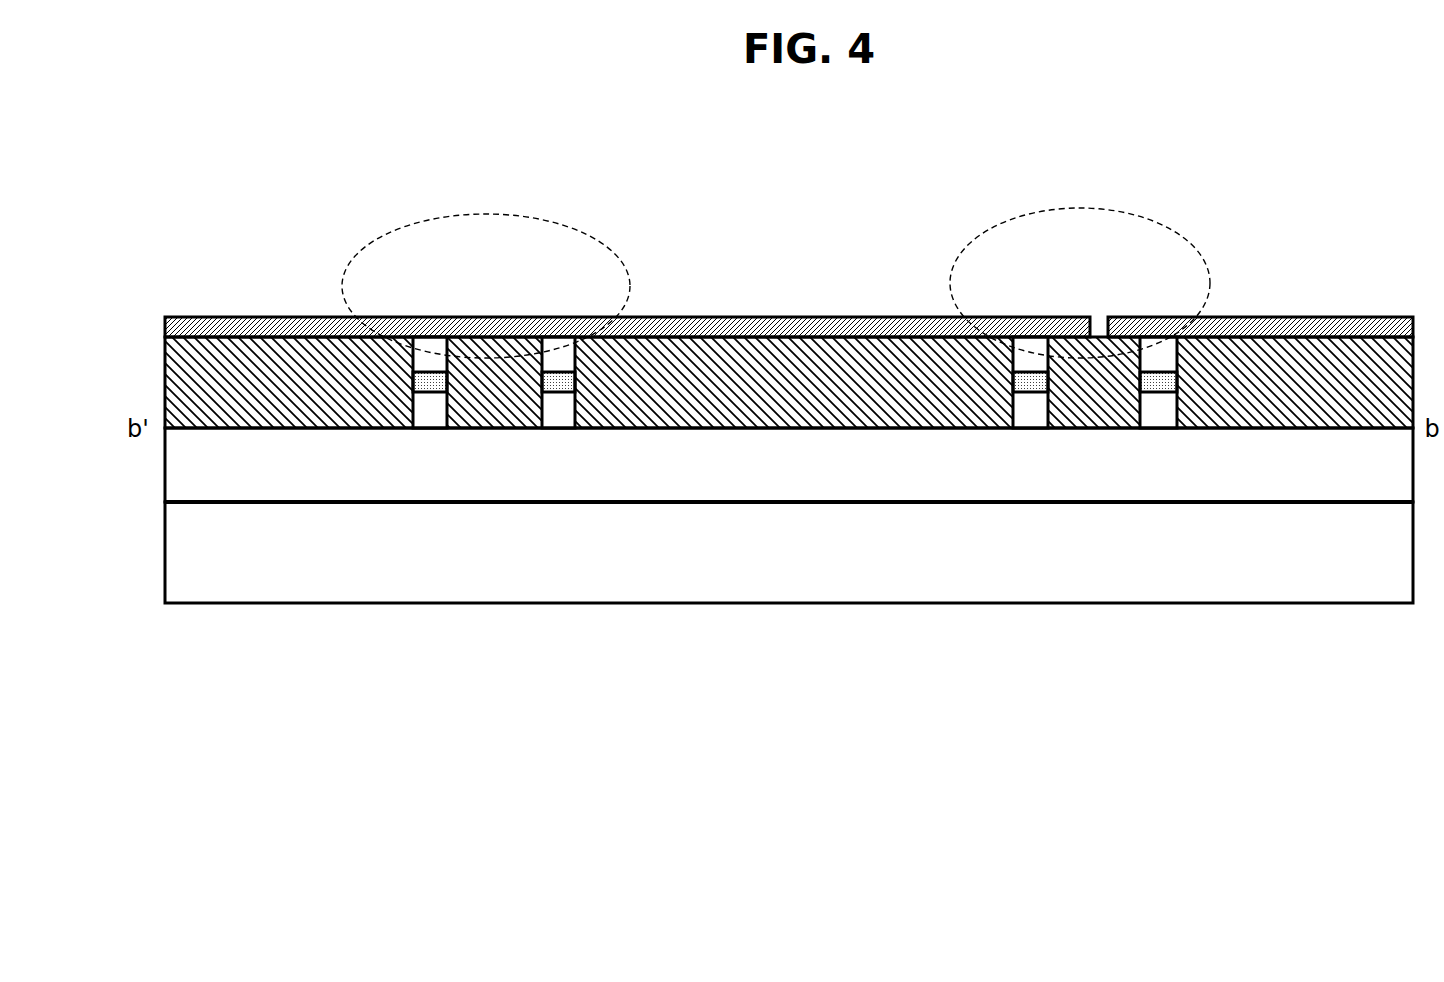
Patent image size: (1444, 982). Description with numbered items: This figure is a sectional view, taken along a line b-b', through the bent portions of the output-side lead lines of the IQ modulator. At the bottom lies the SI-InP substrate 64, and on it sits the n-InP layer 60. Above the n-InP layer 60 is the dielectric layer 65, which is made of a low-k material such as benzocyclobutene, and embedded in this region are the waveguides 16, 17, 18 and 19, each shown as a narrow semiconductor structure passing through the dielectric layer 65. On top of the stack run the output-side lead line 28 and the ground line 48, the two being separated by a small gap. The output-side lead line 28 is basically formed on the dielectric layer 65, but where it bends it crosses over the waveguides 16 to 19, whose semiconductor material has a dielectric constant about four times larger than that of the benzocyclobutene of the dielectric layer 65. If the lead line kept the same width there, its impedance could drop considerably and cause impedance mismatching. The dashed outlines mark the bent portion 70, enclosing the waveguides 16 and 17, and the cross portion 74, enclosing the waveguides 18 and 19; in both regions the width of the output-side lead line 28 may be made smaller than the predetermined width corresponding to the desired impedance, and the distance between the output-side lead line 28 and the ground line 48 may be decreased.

The waveguide 16 is at (1138, 307).
The waveguide 17 is at (1008, 307).
The waveguide 18 is at (537, 307).
The waveguide 19 is at (408, 307).
The output-side lead line 28 is at (860, 315).
The ground line 48 is at (1277, 318).
The n-InP layer 60 is at (800, 470).
The SI-InP substrate 64 is at (480, 555).
The dielectric layer 65 is at (255, 390).
The bent portion 70 is at (1150, 222).
The cross portion 74 is at (553, 225).